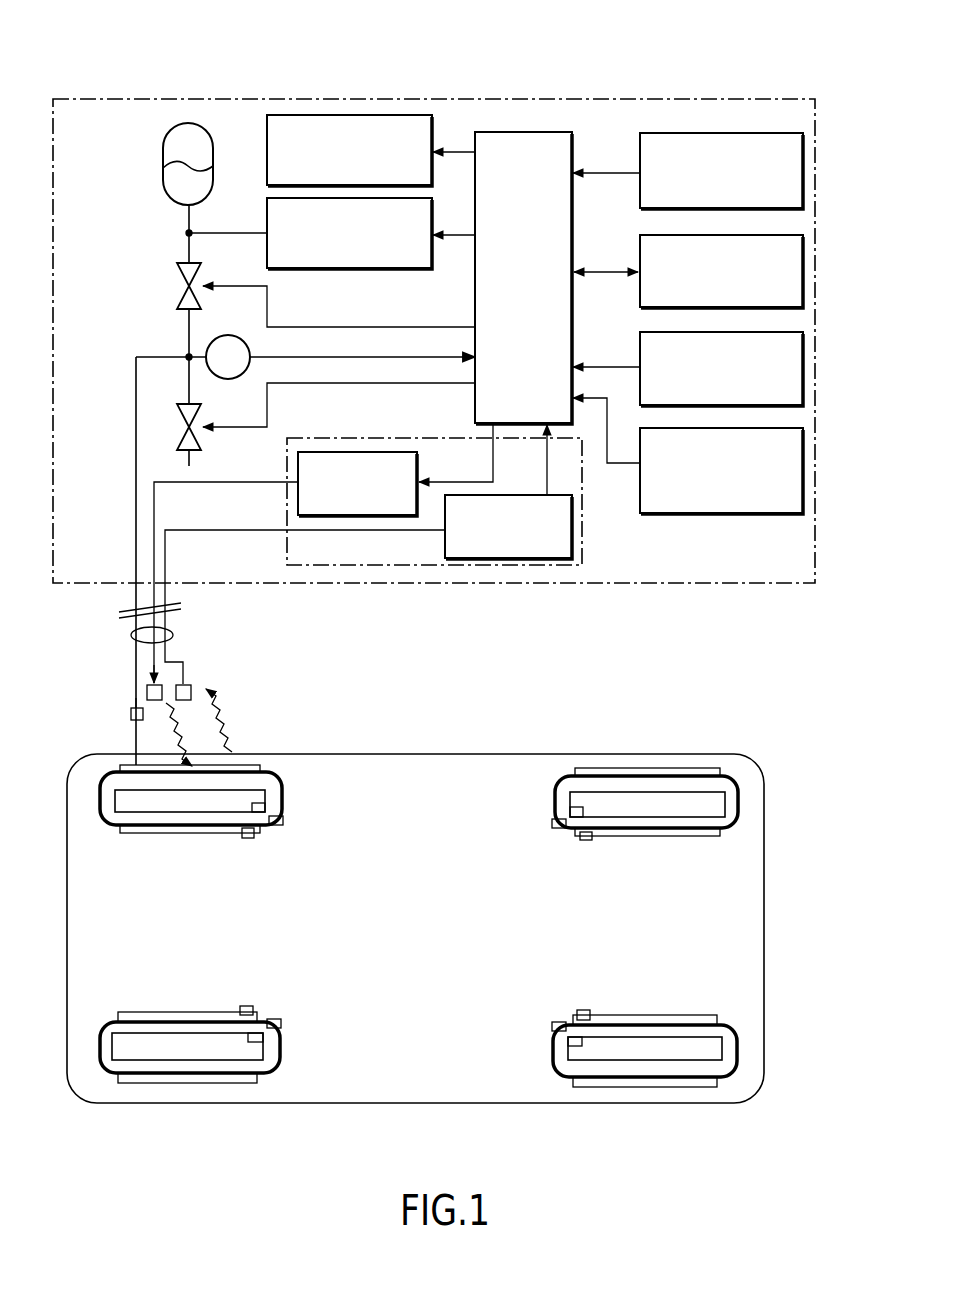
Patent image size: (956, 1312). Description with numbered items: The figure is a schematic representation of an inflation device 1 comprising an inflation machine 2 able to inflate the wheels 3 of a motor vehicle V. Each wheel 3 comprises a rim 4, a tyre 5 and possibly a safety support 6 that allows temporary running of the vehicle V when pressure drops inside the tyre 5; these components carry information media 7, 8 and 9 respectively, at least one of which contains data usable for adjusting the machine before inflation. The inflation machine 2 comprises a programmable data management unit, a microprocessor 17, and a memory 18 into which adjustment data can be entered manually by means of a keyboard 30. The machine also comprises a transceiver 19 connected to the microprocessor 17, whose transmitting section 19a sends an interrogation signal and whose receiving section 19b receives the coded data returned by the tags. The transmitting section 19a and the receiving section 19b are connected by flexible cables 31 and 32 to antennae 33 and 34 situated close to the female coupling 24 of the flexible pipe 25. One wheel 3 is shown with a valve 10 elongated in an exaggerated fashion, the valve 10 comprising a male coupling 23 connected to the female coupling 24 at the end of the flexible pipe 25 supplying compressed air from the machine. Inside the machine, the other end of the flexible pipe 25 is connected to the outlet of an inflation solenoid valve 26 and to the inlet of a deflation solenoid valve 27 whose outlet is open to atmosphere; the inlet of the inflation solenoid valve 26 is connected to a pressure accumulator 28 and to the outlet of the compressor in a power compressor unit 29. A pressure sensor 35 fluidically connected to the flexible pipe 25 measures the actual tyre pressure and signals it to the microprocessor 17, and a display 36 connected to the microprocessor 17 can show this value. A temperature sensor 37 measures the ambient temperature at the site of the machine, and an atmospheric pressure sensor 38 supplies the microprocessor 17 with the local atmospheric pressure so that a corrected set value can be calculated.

The inflation device 1 is at (145, 95).
The inflation machine 2 is at (651, 96).
The wheel 3 is at (100, 815).
The rim 4 is at (175, 833).
The tyre 5 is at (282, 780).
The safety support 6 is at (141, 812).
The information medium 7 is at (247, 839).
The information medium 8 is at (277, 826).
The information medium 9 is at (266, 808).
The valve 10 is at (136, 755).
The microprocessor 17 is at (540, 132).
The memory 18 is at (803, 274).
The transceiver 19 is at (421, 569).
The transmitting section 19a is at (348, 452).
The receiving section 19b is at (545, 560).
The male coupling 23 is at (131, 716).
The female coupling 24 is at (136, 704).
The flexible pipe 25 is at (136, 655).
The inflation solenoid valve 26 is at (177, 287).
The deflation solenoid valve 27 is at (200, 440).
The pressure accumulator 28 is at (163, 178).
The power compressor unit 29 is at (372, 268).
The keyboard 30 is at (803, 382).
The flexible cable 31 is at (218, 483).
The flexible cable 32 is at (215, 531).
The antenna 33 is at (162, 685).
The antenna 34 is at (191, 695).
The pressure sensor 35 is at (226, 335).
The display 36 is at (267, 168).
The temperature sensor 37 is at (775, 133).
The atmospheric pressure sensor 38 is at (803, 462).
The motor vehicle V is at (555, 750).